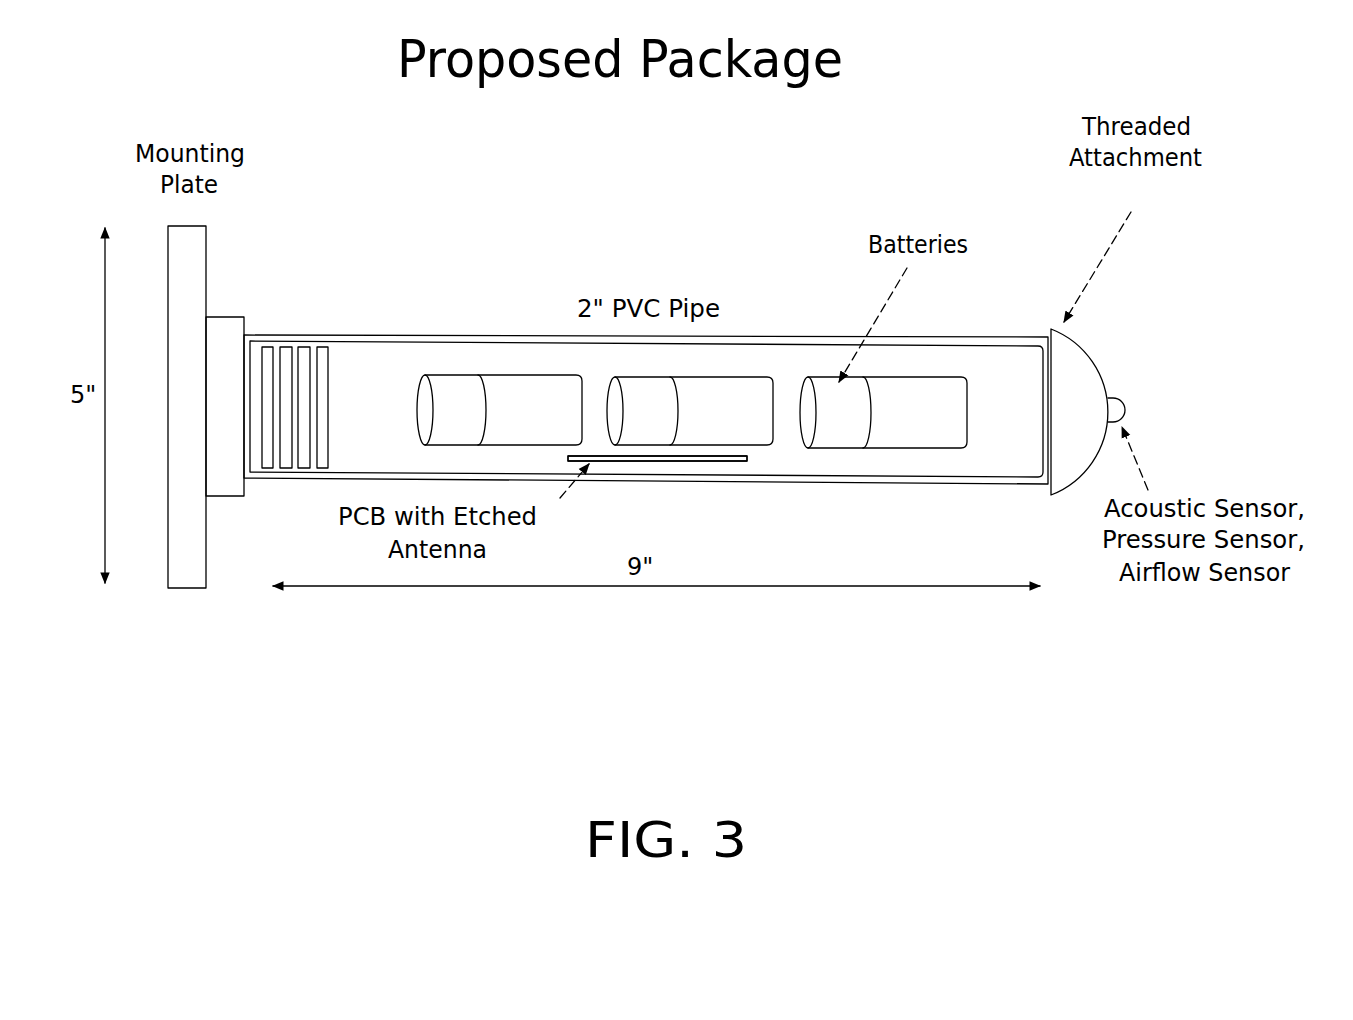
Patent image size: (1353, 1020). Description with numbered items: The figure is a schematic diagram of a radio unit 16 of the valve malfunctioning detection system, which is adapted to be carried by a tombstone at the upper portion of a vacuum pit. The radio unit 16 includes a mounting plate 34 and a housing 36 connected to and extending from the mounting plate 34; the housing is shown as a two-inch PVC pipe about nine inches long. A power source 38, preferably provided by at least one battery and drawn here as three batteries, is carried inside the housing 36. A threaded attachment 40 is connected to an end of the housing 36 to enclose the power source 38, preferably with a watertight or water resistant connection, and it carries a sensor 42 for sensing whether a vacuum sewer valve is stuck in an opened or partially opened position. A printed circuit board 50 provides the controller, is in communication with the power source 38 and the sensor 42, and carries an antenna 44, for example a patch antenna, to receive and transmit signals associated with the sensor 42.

The radio unit 16 is at (422, 263).
The mounting plate 34 is at (207, 255).
The housing 36 is at (307, 333).
The power source 38 is at (517, 373).
The threaded attachment 40 is at (1073, 334).
The sensor 42 is at (1125, 404).
The antenna 44 is at (437, 567).
The printed circuit board (PCB) 50 is at (327, 522).